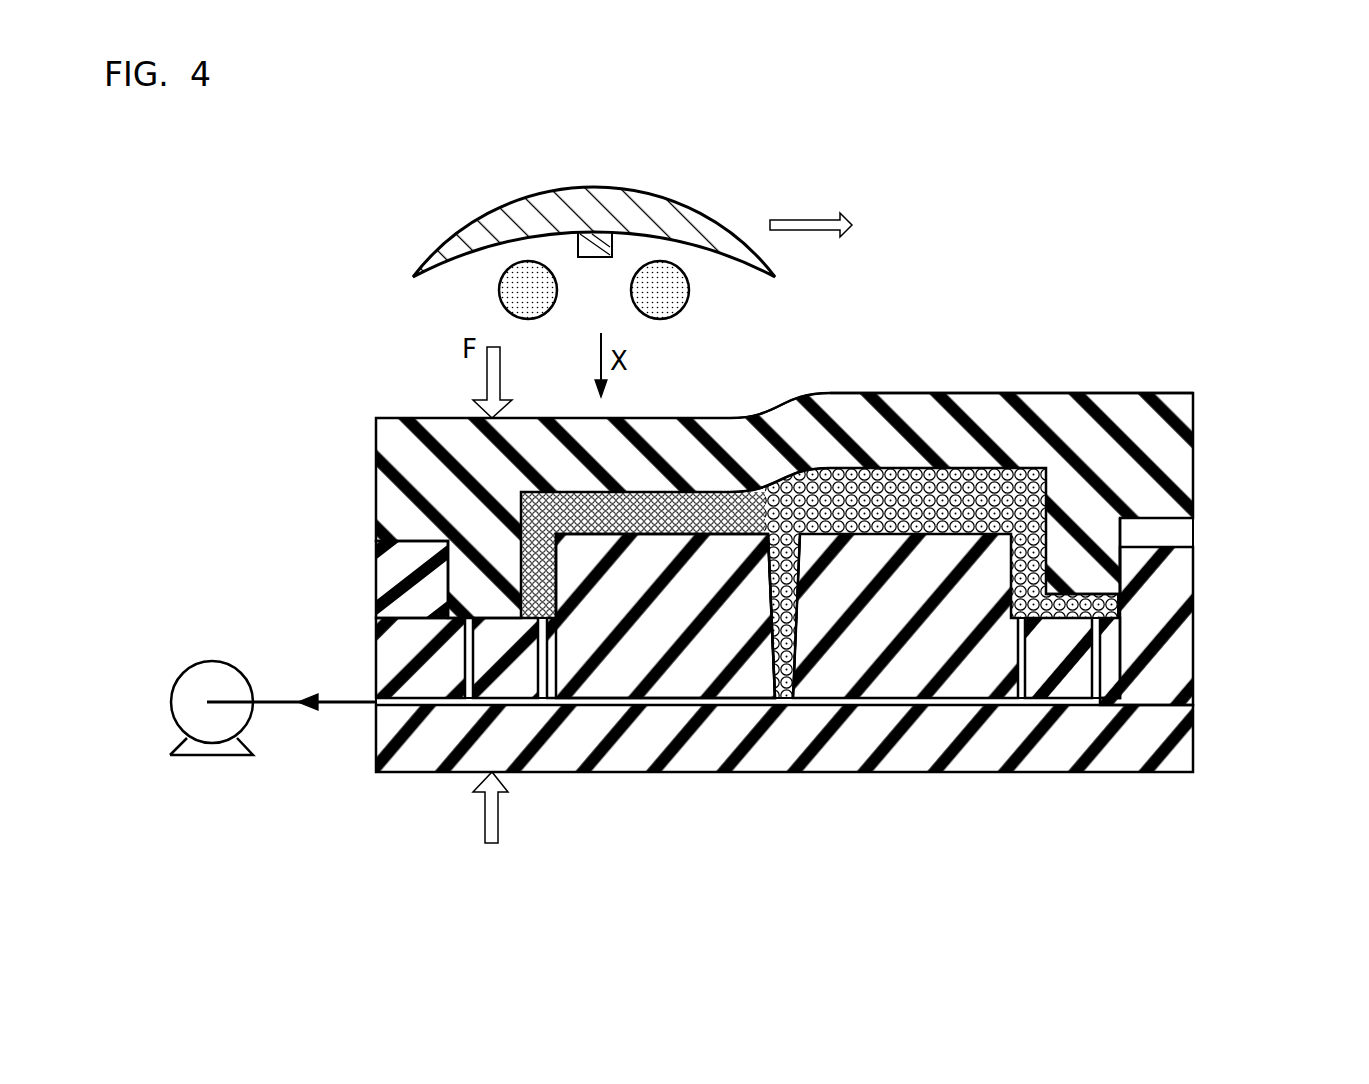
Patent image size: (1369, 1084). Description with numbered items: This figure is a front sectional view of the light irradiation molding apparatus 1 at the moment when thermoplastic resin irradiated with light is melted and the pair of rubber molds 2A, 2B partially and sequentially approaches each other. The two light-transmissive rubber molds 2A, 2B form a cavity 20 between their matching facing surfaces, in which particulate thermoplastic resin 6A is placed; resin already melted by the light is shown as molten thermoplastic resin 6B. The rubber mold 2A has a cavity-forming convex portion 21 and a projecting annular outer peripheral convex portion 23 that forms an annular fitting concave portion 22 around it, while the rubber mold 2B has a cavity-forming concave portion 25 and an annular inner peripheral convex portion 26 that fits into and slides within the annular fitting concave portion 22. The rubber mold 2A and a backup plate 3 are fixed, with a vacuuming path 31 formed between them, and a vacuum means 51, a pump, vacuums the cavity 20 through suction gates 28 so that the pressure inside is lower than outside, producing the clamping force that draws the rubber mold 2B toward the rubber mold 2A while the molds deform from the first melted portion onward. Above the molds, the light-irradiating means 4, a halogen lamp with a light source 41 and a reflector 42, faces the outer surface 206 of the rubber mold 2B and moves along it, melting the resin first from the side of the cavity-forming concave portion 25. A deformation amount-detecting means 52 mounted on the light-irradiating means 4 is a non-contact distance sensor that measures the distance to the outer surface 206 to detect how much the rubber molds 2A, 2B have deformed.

The light irradiation molding apparatus 1 is at (604, 795).
The rubber mold 2A is at (857, 714).
The rubber mold 2B is at (1200, 491).
The backup plate 3 is at (418, 753).
The light-irradiating means 4 is at (578, 204).
The particulate thermoplastic resin 6A is at (962, 507).
The molten thermoplastic resin 6B is at (517, 514).
The cavity 20 is at (670, 479).
The cavity-forming convex portion 21 is at (707, 578).
The annular fitting concave portion 22 is at (1118, 618).
The annular outer peripheral convex portion 23 is at (398, 577).
The cavity-forming concave portion 25 is at (736, 505).
The annular inner peripheral convex portion 26 is at (1085, 577).
The suction gates 28 is at (1025, 663).
The vacuuming path 31 is at (828, 703).
The light source 41 is at (664, 285).
The reflector 42 is at (509, 222).
The vacuum means 51 is at (182, 712).
The deformation amount-detecting means 52 is at (598, 245).
The outer surface of rubber mold 2B 206 is at (922, 397).